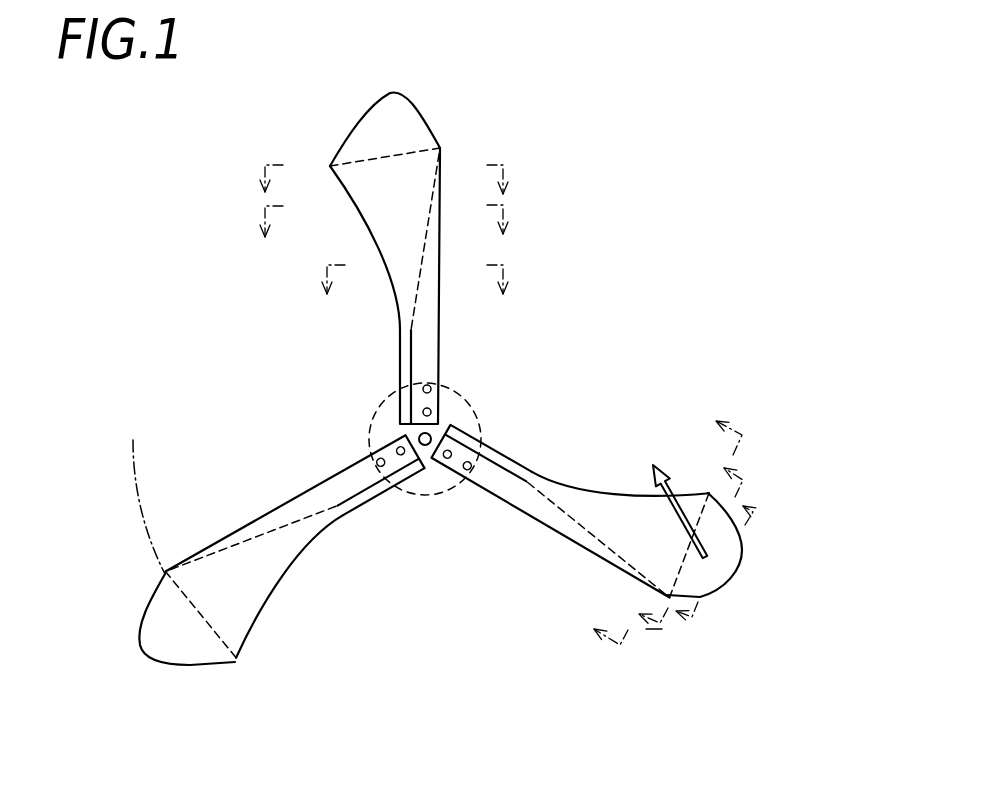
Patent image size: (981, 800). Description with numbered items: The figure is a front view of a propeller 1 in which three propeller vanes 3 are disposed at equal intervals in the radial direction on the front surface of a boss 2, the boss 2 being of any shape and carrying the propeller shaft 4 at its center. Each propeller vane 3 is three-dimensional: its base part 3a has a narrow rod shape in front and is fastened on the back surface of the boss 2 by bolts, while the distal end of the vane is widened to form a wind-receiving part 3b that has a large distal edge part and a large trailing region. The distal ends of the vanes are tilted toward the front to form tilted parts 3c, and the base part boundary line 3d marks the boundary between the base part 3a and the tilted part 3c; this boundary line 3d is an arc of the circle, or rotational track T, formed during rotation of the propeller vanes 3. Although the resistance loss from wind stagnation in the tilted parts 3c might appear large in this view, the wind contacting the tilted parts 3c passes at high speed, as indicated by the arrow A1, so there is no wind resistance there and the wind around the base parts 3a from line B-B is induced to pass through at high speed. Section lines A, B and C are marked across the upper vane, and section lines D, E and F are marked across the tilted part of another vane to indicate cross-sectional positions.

The propeller 1 is at (574, 101).
The boss 2 is at (423, 496).
The propeller vane 3 is at (440, 390).
The base part 3a is at (441, 363).
The wind-receiving part 3b is at (362, 213).
The tilted part 3c is at (355, 115).
The base part boundary line 3d is at (397, 150).
The propeller shaft 4 is at (416, 436).
The rotational track T is at (136, 472).
The arrow A1 is at (667, 497).
The line A- A is at (378, 180).
The line B- B is at (378, 221).
The line C- C is at (410, 277).
The line D- D is at (676, 533).
The line E- E is at (699, 555).
The line F- F is at (725, 574).